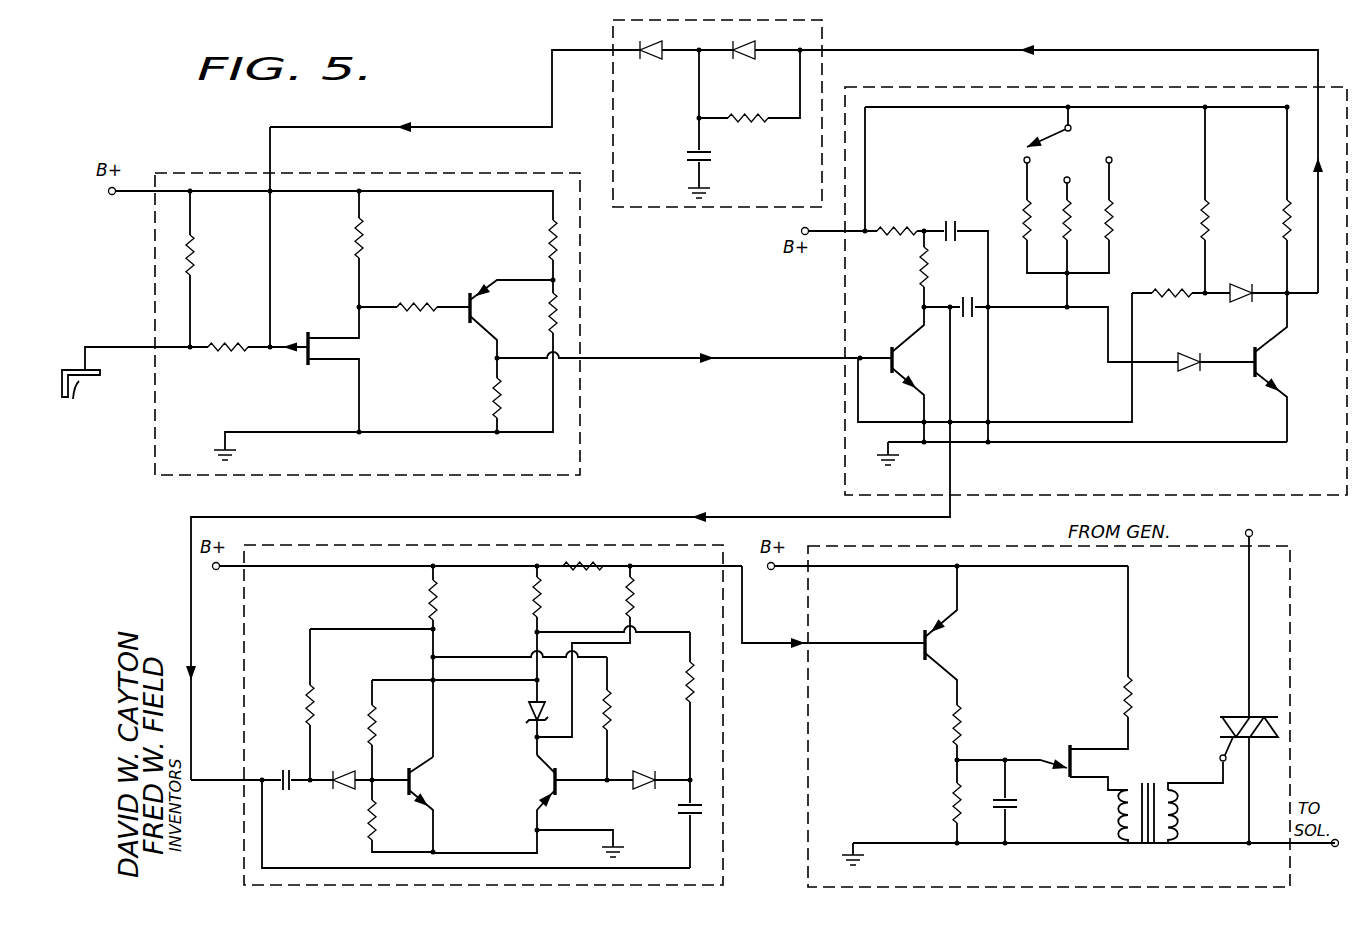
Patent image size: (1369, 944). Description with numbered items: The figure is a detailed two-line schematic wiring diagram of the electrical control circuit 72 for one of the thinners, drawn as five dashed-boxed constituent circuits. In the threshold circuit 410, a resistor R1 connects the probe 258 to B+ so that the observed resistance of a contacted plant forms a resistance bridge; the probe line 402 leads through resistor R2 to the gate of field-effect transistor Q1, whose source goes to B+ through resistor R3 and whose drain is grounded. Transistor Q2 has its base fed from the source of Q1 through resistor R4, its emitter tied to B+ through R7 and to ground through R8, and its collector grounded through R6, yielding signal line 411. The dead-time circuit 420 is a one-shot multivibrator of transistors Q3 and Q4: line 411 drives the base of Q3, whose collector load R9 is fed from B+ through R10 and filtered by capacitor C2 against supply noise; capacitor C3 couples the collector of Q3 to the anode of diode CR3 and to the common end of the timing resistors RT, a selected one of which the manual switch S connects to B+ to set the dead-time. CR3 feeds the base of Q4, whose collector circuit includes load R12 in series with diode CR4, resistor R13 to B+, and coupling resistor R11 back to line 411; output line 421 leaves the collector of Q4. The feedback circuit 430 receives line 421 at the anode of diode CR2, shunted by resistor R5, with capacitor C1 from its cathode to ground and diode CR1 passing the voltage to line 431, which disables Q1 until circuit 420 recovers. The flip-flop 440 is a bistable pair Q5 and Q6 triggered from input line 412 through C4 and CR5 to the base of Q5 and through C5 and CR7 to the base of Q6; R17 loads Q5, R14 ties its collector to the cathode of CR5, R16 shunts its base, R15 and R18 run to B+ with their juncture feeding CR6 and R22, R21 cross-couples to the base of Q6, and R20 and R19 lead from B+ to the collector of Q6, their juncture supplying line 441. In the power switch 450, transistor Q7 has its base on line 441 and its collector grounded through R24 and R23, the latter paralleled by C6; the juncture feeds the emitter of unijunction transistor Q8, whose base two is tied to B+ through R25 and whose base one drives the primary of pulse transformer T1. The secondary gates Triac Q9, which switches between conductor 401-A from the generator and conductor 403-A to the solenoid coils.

The electrical control circuit 72 is at (697, 434).
The probe 258 is at (76, 410).
The probe input line 402 is at (100, 345).
The threshold circuit 410 is at (348, 301).
The resistor R1 is at (203, 270).
The resistor R2 is at (230, 366).
The resistor R3 is at (334, 250).
The resistor R4 is at (414, 324).
The resistor R6 is at (474, 394).
The resistor R7 is at (532, 240).
The resistor R8 is at (532, 313).
The field-effect transistor Q1 is at (314, 368).
The transistor Q2 is at (498, 309).
The signal line 411 is at (640, 357).
The signal line 431 is at (512, 126).
The feedback circuit 430 is at (717, 113).
The semiconductor diode CR1 is at (642, 69).
The semiconductor diode CR2 is at (741, 69).
The capacitor C1 is at (680, 124).
The resistor R5 is at (749, 105).
The output signal line 421 is at (1127, 52).
The dead-time circuit 420 is at (1078, 291).
The resistor R10 is at (894, 216).
The capacitor C2 is at (955, 319).
The resistor R9 is at (904, 269).
The capacitor C3 is at (1028, 315).
The transistor Q3 is at (892, 374).
The signal input line 412 is at (742, 515).
The manual selection switch S is at (1040, 137).
The timing resistors RT is at (1081, 228).
The resistor R12 is at (1183, 200).
The resistor R13 is at (1266, 200).
The coupling resistor R11 is at (1168, 277).
The semiconductor diode CR4 is at (1261, 278).
The semiconductor diode CR3 is at (1193, 382).
The transistor Q4 is at (1256, 367).
The flip-flop 440 is at (481, 715).
The resistor R17 is at (410, 661).
The resistor R14 is at (289, 704).
The resistor R15 is at (390, 730).
The resistor R16 is at (377, 816).
The capacitor C4 is at (250, 767).
The semiconductor diode CR5 is at (341, 766).
The transistor Q5 is at (416, 804).
The resistor R18 is at (513, 634).
The resistor R20 is at (580, 585).
The resistor R19 is at (606, 651).
The resistor R22 is at (667, 706).
The resistor R21 is at (625, 718).
The semiconductor diode CR6 is at (511, 728).
The transistor Q6 is at (533, 806).
The semiconductor diode CR7 is at (658, 767).
The capacitor C5 is at (675, 824).
The signal input line 441 is at (770, 645).
The power switch 450 is at (1057, 716).
The transistor Q7 is at (955, 635).
The resistor R24 is at (928, 744).
The resistor R23 is at (928, 813).
The capacitor C6 is at (1012, 801).
The resistor R25 is at (1101, 657).
The unijunction transistor Q8 is at (1078, 751).
The pulse transformer T1 is at (1175, 790).
The Triac Q9 is at (1234, 713).
The conductor 401-A is at (1249, 603).
The conductor 403-A is at (1317, 850).